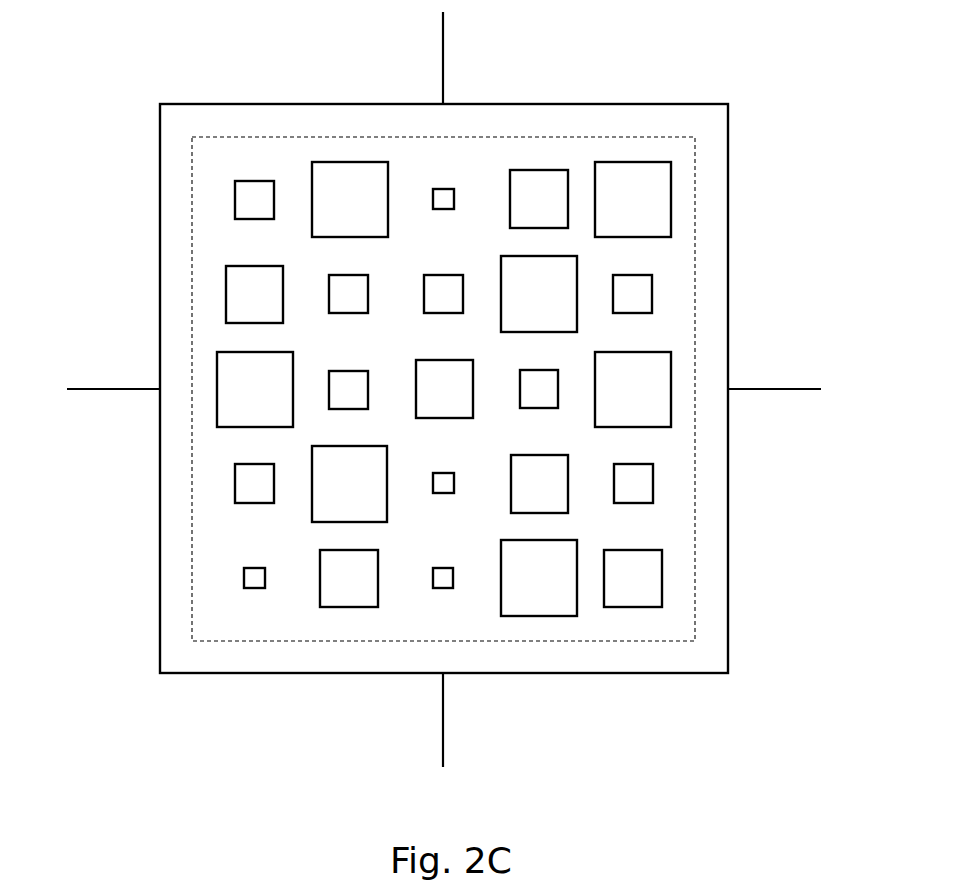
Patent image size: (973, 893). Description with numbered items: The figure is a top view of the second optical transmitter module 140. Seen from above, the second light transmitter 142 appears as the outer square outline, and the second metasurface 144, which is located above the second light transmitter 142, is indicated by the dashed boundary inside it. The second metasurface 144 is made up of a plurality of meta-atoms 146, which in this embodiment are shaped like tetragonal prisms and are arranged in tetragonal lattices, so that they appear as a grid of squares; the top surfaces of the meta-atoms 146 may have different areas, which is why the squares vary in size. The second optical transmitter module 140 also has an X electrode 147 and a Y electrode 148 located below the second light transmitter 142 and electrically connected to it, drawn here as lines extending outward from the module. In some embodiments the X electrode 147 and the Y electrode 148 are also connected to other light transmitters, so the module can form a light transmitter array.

The second optical transmitter module 140 is at (955, 57).
The second light transmitter 142 is at (722, 603).
The second metasurface 144 is at (695, 225).
The meta-atoms 146 is at (450, 589).
The X electrode 147 is at (444, 40).
The Y electrode 148 is at (797, 388).